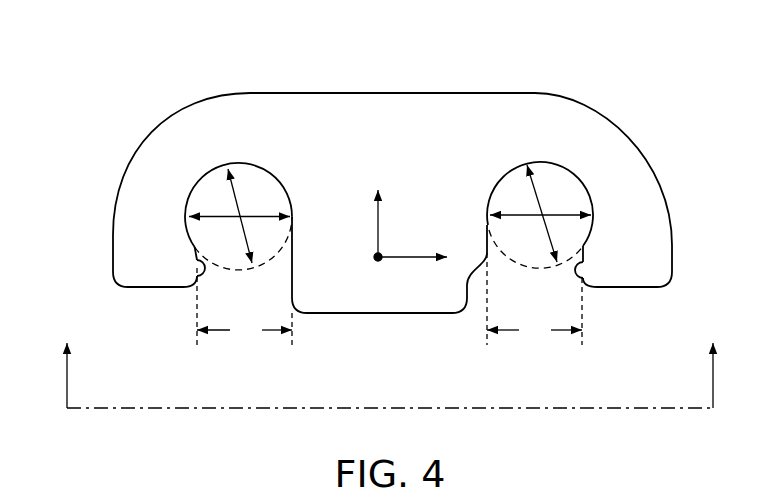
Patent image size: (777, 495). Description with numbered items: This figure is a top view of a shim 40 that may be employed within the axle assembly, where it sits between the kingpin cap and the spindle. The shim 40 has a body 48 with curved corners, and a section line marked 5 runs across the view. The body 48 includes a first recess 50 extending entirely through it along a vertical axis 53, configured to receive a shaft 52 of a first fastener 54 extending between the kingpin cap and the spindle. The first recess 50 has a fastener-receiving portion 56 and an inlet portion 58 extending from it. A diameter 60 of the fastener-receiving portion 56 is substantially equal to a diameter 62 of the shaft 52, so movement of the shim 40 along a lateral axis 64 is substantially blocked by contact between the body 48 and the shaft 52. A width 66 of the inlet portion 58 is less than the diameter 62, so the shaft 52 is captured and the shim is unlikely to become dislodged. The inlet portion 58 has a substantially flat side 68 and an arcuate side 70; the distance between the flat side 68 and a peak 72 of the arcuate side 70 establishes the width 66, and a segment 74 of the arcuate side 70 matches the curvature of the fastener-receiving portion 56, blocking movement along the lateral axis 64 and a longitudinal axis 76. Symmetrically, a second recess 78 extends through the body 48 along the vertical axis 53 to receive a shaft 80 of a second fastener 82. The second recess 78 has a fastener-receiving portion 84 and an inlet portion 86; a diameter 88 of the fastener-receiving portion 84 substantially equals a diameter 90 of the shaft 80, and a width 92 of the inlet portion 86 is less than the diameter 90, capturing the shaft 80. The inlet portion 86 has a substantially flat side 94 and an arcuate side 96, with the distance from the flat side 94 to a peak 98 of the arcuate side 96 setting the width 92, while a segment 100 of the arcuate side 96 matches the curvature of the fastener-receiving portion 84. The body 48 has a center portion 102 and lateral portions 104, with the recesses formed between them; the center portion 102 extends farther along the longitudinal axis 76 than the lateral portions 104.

The shim 40 is at (243, 48).
The body 48 is at (462, 110).
The first recess 50 is at (183, 187).
The shaft 52 is at (296, 237).
The vertical axis 53 is at (379, 259).
The first fastener 54 is at (281, 166).
The fastener-receiving portion 56 is at (187, 201).
The inlet portion 58 is at (222, 284).
The diameter 60 is at (232, 214).
The diameter 62 is at (241, 193).
The lateral axis 64 is at (402, 257).
The width 66 is at (244, 308).
The substantially flat side 68 is at (294, 250).
The arcuate side 70 is at (196, 258).
The peak 72 is at (199, 279).
The segment 74 is at (188, 226).
The longitudinal axis 76 is at (378, 226).
The second recess 78 is at (592, 188).
The shaft 80 is at (516, 224).
The second fastener 82 is at (531, 157).
The fastener-receiving portion 84 is at (591, 201).
The inlet portion 86 is at (555, 284).
The diameter 88 is at (550, 214).
The diameter 90 is at (538, 197).
The width 92 is at (534, 299).
The substantially flat side 94 is at (462, 310).
The arcuate side 96 is at (584, 262).
The peak 98 is at (582, 279).
The segment 100 is at (591, 227).
The center portion 102 is at (313, 308).
The lateral portions 104 is at (145, 143).
The section line 5- 5 is at (387, 371).